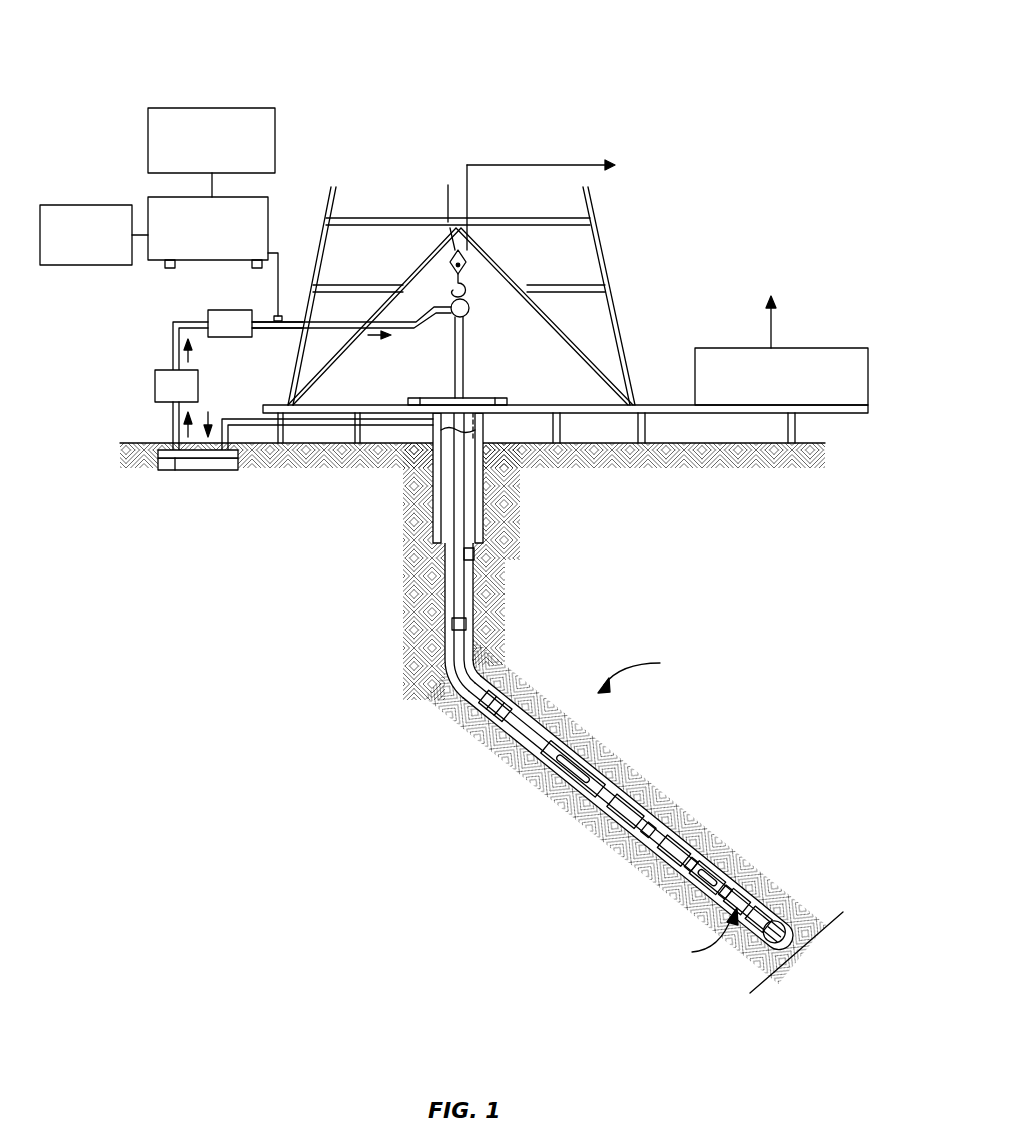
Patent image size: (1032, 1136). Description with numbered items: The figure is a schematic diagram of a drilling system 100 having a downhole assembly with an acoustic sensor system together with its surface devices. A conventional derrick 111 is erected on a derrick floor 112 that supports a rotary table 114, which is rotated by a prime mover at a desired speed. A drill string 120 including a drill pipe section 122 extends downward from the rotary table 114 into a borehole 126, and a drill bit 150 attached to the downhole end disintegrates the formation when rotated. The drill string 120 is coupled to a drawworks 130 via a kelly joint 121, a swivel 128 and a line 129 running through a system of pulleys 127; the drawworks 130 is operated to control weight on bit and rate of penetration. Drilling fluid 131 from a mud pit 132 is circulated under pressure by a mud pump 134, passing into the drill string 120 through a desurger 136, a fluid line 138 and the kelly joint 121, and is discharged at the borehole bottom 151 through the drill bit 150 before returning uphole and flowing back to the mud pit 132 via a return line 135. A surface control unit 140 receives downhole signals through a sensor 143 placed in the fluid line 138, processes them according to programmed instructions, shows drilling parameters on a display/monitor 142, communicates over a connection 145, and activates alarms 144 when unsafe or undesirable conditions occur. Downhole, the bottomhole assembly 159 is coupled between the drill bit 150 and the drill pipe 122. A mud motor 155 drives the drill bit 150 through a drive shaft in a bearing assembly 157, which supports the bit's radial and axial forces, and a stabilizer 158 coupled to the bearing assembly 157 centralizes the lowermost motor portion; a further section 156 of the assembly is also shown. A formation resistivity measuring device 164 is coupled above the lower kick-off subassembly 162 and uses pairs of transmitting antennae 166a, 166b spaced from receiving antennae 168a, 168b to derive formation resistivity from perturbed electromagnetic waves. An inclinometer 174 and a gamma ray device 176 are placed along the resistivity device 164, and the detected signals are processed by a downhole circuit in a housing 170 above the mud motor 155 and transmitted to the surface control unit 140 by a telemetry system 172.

The drilling system 100 is at (135, 48).
The derrick 111 is at (610, 285).
The derrick floor 112 is at (628, 405).
The rotary table 114 is at (485, 398).
The drill string 120 is at (470, 558).
The kelly joint 121 is at (465, 352).
The drill pipe section 122 is at (446, 621).
The borehole 126 is at (481, 676).
The system of pulleys 127 is at (492, 694).
The swivel 128 is at (440, 320).
The line 129 is at (470, 212).
The drawworks 130 is at (805, 348).
The drilling fluid 131 is at (175, 470).
The mud pit 132 is at (224, 470).
The mud pump 134 is at (155, 386).
The return line 135 is at (303, 432).
The desurger 136 is at (210, 310).
The fluid line 138 is at (272, 330).
The surface control unit 140 is at (268, 197).
The display/monitor 142 is at (229, 108).
The sensor 143 is at (278, 316).
The alarms 144 is at (72, 205).
The communication line 145 is at (280, 253).
The drill bit 150 is at (774, 931).
The borehole bottom 151 is at (774, 962).
The mud motor 155 is at (573, 769).
The drill string segment 156 is at (573, 769).
The bearing assembly 157 is at (691, 937).
The stabilizer 158 is at (758, 919).
The downhole subassembly 159 is at (652, 672).
The lower kick-off subassembly 162 is at (736, 901).
The formation resistivity measuring device 164 is at (673, 850).
The transmitting antenna 166a is at (625, 811).
The transmitting antenna 166b is at (707, 878).
The receiving antenna 168a is at (648, 830).
The receiving antenna 168b is at (691, 864).
The housing 170 is at (495, 705).
The telemetry system 172 is at (581, 680).
The inclinometer 174 is at (707, 877).
The gamma ray device 176 is at (725, 892).